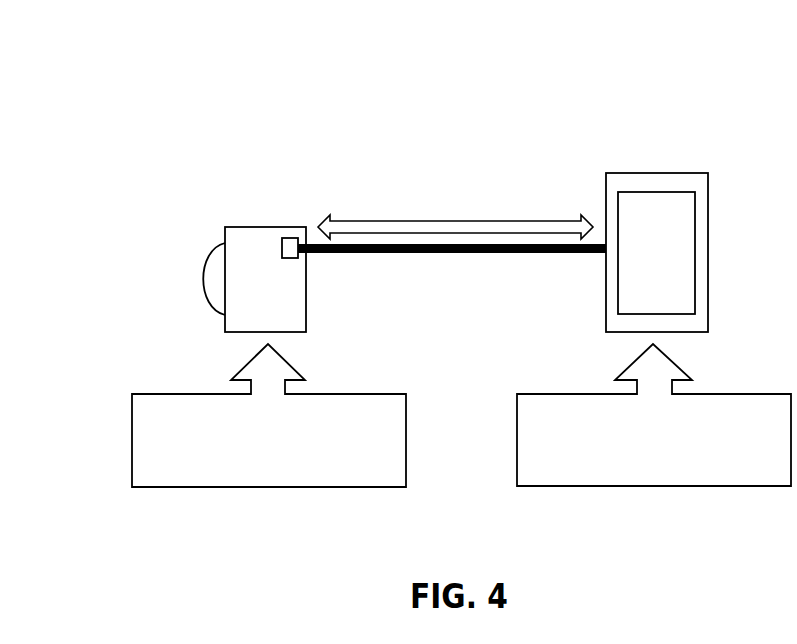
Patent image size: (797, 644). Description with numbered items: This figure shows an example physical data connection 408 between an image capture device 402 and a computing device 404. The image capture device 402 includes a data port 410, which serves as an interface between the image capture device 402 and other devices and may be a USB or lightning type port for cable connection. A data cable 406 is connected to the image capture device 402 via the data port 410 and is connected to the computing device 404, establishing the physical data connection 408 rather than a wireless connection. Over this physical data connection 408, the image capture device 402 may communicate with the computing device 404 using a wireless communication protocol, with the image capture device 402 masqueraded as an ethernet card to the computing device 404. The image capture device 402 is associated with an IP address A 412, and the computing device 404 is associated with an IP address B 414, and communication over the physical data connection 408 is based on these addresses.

The image capture device 402 is at (262, 227).
The computing device 404 is at (660, 173).
The data cable 406 is at (470, 253).
The physical data connection 408 is at (477, 160).
The data port 410 is at (282, 244).
The IP address A 412 is at (269, 415).
The IP address B 414 is at (654, 415).